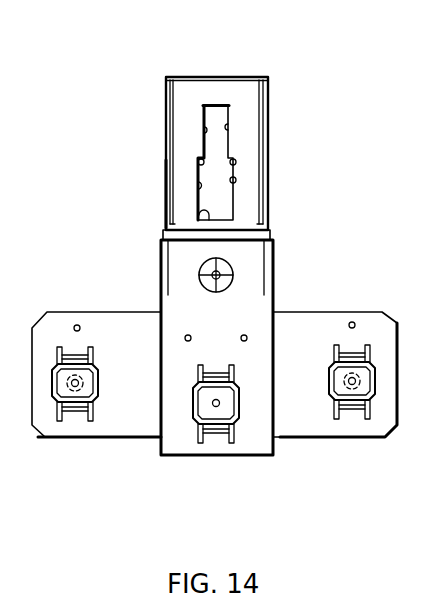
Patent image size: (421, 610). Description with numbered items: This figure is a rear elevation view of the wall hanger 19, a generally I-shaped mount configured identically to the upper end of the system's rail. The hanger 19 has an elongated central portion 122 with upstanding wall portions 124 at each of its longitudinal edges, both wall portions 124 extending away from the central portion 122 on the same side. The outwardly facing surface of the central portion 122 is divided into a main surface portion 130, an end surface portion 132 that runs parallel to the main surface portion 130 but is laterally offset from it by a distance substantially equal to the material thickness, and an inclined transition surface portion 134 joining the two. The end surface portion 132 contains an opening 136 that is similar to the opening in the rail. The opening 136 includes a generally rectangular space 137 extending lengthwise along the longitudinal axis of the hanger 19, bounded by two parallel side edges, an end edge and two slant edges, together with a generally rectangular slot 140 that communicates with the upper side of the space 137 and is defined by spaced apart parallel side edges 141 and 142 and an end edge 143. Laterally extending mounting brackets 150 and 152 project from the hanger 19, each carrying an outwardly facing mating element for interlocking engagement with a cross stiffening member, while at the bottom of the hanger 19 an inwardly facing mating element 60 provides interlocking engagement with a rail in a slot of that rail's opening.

The wall hanger 19 is at (286, 110).
The inwardly facing mating element 60 is at (207, 413).
The elongated central portion 122 is at (273, 237).
The upstanding wall portions 124 is at (170, 172).
The main surface portion 130 is at (187, 304).
The end surface portion 132 is at (252, 90).
The transition surface portion 134 is at (263, 234).
The opening 136 is at (190, 140).
The generally rectangular space 137 is at (198, 205).
The generally rectangular slot 140 is at (217, 117).
The side edge 141 is at (203, 130).
The side edge 142 is at (251, 93).
The end edge 143 is at (207, 113).
The mounting bracket 150 is at (65, 311).
The mounting bracket 152 is at (337, 312).